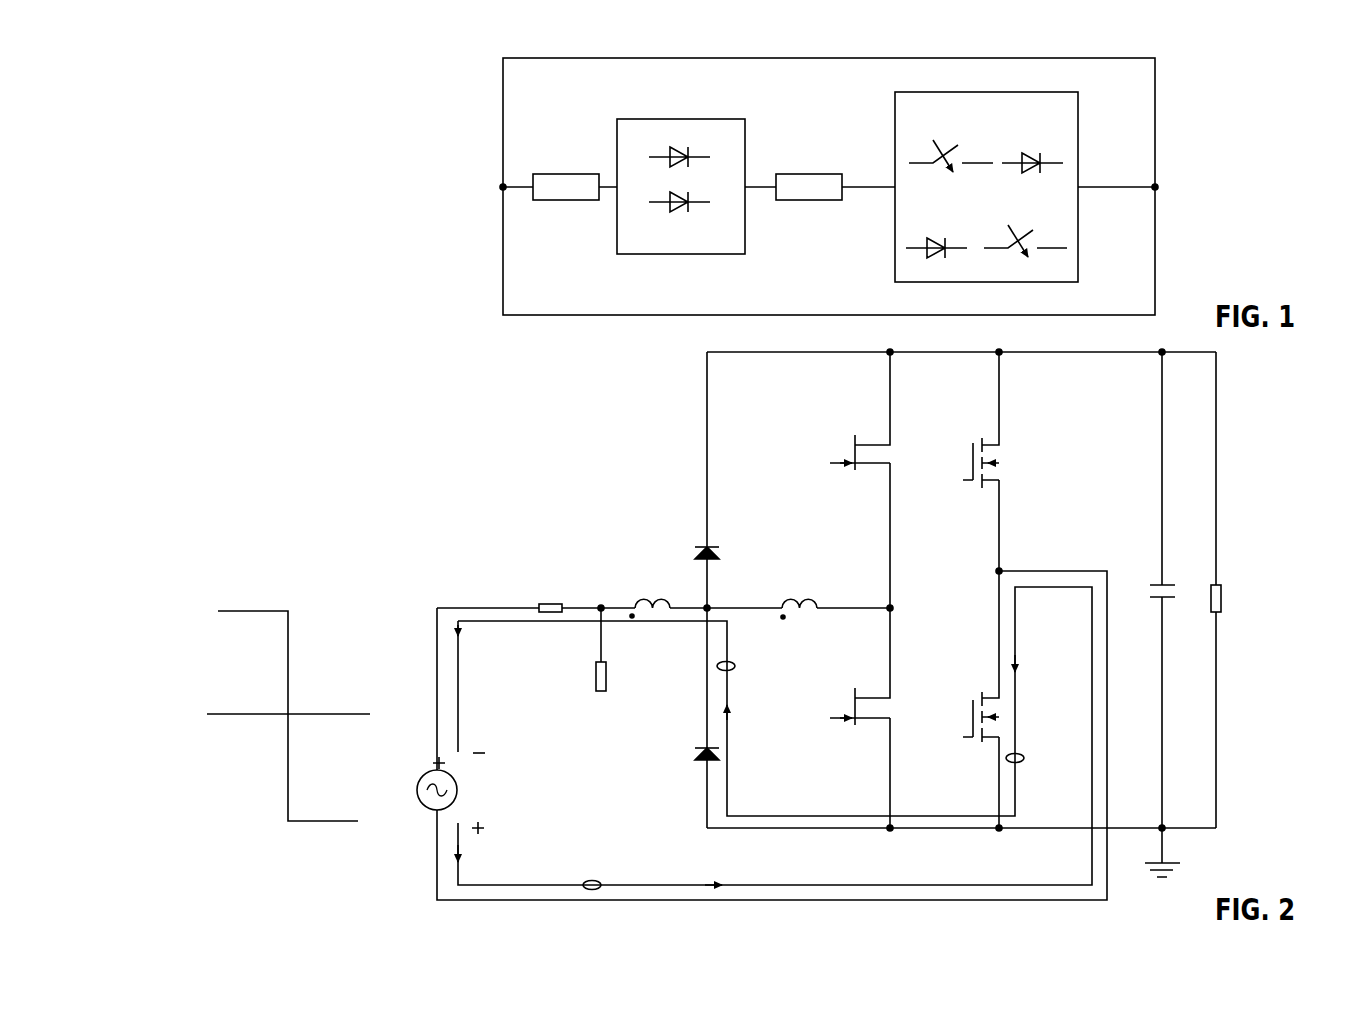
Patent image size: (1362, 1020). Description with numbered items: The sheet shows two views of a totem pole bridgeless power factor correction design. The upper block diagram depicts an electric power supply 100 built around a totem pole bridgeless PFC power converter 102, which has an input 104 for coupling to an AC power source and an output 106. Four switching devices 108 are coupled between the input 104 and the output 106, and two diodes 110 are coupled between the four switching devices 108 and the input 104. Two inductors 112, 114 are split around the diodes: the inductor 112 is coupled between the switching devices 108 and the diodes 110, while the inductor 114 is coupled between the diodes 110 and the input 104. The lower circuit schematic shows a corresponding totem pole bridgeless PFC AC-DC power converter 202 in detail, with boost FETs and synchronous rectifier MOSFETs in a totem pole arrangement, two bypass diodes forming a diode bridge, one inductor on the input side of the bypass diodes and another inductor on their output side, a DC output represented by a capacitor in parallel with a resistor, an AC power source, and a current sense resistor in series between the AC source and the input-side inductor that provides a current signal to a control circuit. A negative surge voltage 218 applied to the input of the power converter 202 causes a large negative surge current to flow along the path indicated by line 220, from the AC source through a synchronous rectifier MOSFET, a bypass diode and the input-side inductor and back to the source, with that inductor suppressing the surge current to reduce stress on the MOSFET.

In FIG. 1, the electric power supply 100 is at (420, 40).
In FIG. 1, the totem pole bridgeless PFC power converter 102 is at (568, 58).
In FIG. 1, the input 104 is at (503, 187).
In FIG. 1, the output 106 is at (1155, 187).
In FIG. 1, the switching devices 108 is at (930, 92).
In FIG. 1, the diodes 110 is at (682, 119).
In FIG. 1, the inductor 112 is at (808, 174).
In FIG. 1, the inductor 114 is at (567, 174).
In FIG. 2, the power converter 202 is at (518, 452).
In FIG. 2, the voltage 218 is at (316, 619).
In FIG. 2, the line 220 is at (735, 668).